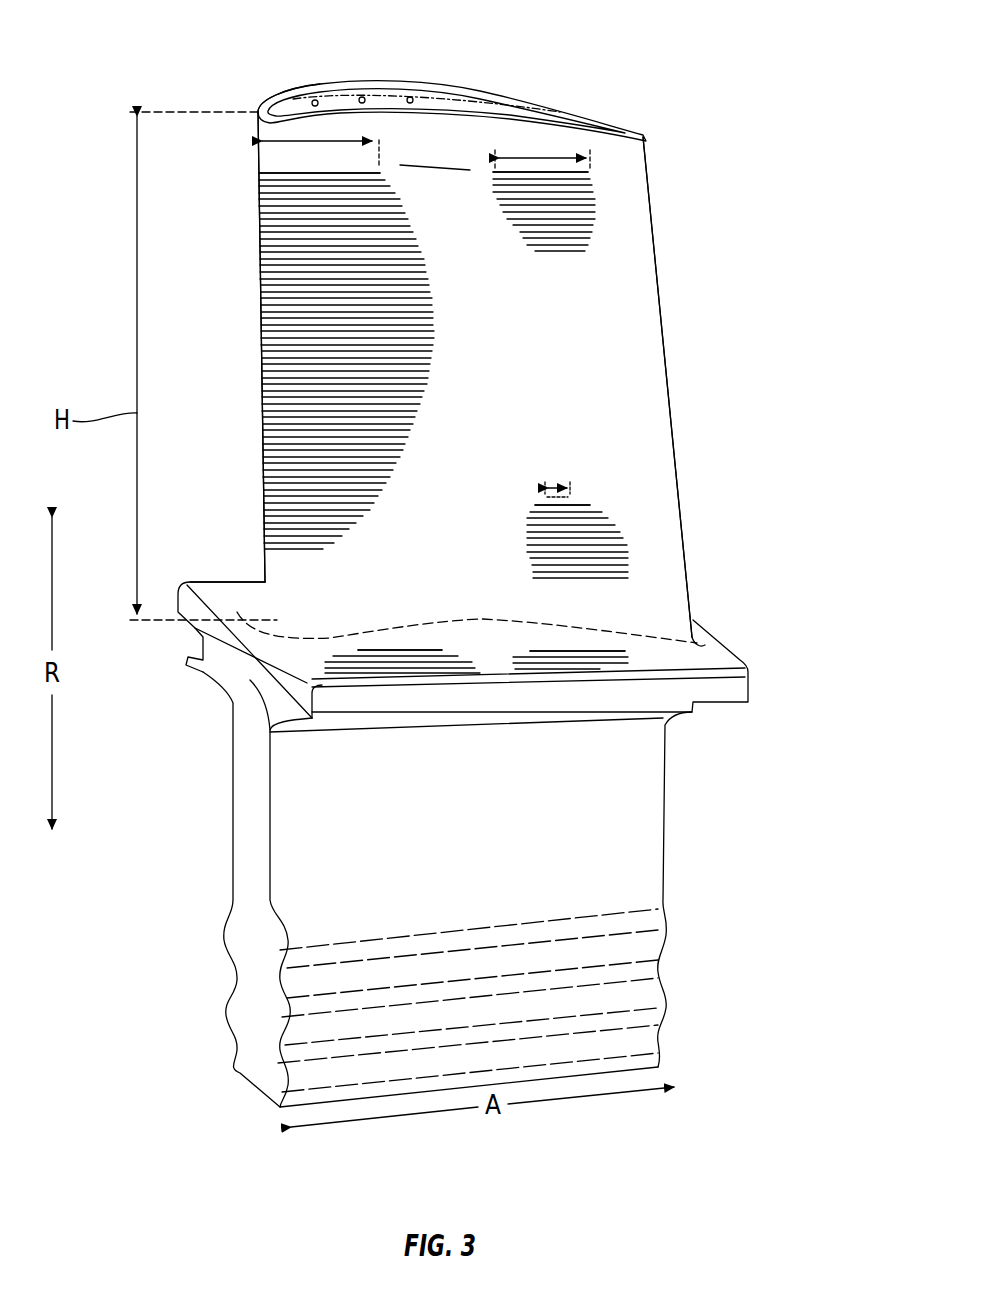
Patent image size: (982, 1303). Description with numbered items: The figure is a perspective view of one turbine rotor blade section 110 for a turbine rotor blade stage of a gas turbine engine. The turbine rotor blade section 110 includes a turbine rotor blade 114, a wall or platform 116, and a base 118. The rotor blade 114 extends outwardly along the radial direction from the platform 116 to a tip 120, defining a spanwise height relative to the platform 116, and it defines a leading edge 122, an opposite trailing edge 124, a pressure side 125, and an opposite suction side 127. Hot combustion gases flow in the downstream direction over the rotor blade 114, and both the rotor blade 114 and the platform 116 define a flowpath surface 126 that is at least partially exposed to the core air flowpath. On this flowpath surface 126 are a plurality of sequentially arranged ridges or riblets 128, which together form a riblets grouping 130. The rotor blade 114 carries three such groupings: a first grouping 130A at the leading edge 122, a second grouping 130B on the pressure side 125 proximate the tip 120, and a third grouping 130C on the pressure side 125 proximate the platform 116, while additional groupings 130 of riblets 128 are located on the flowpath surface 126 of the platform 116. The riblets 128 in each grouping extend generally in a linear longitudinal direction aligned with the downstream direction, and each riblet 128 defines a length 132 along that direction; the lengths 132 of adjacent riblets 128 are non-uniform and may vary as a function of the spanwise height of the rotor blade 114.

The turbine rotor blade section 110 is at (108, 203).
The turbine rotor blade 114 is at (623, 368).
The platform 116 is at (712, 660).
The base 118 is at (728, 843).
The tip 120 is at (446, 80).
The leading edge 122 is at (262, 380).
The trailing edge 124 is at (678, 414).
The pressure side 125 is at (470, 166).
The flowpath surface 126 is at (606, 297).
The suction side 127 is at (282, 90).
The riblets 128 is at (300, 248).
The riblets grouping 130 is at (510, 648).
The first grouping 130A is at (297, 207).
The second grouping 130B is at (600, 235).
The third grouping 130C is at (545, 473).
The length 132 is at (340, 140).